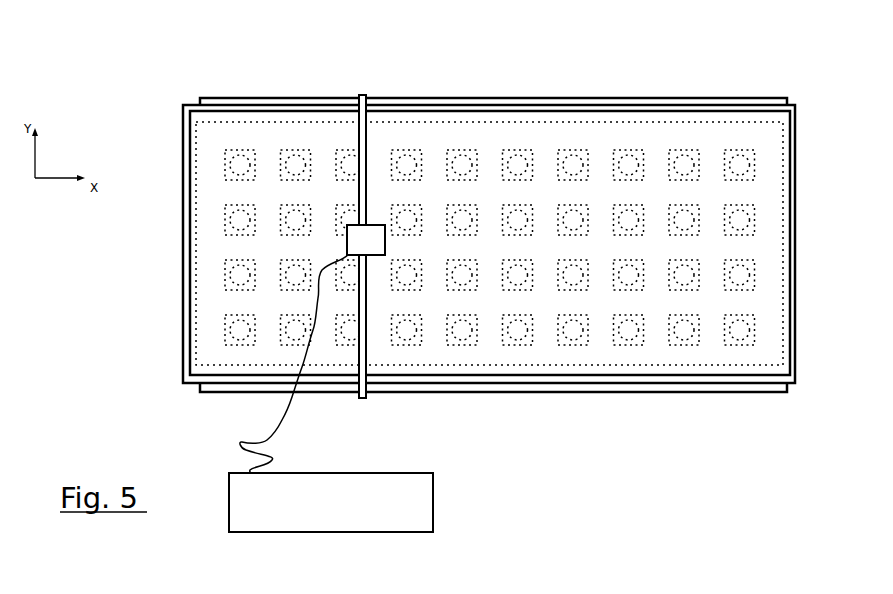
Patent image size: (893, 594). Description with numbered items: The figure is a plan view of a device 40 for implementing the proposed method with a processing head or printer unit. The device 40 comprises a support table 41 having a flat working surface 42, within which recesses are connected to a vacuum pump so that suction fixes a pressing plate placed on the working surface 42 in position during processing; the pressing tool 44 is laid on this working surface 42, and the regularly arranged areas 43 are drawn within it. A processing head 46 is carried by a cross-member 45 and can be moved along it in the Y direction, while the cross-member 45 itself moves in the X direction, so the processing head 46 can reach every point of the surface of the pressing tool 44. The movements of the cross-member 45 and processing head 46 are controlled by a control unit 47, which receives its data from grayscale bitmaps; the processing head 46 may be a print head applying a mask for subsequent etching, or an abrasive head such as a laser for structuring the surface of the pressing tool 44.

The device 40 is at (514, 70).
The support table 41 is at (768, 100).
The working surface 42 is at (602, 340).
The sensor cell squares 43 is at (505, 338).
The pressing tool 44 is at (712, 337).
The cross-member 45 is at (357, 138).
The processing head 46 is at (374, 248).
The control unit 47 is at (423, 508).